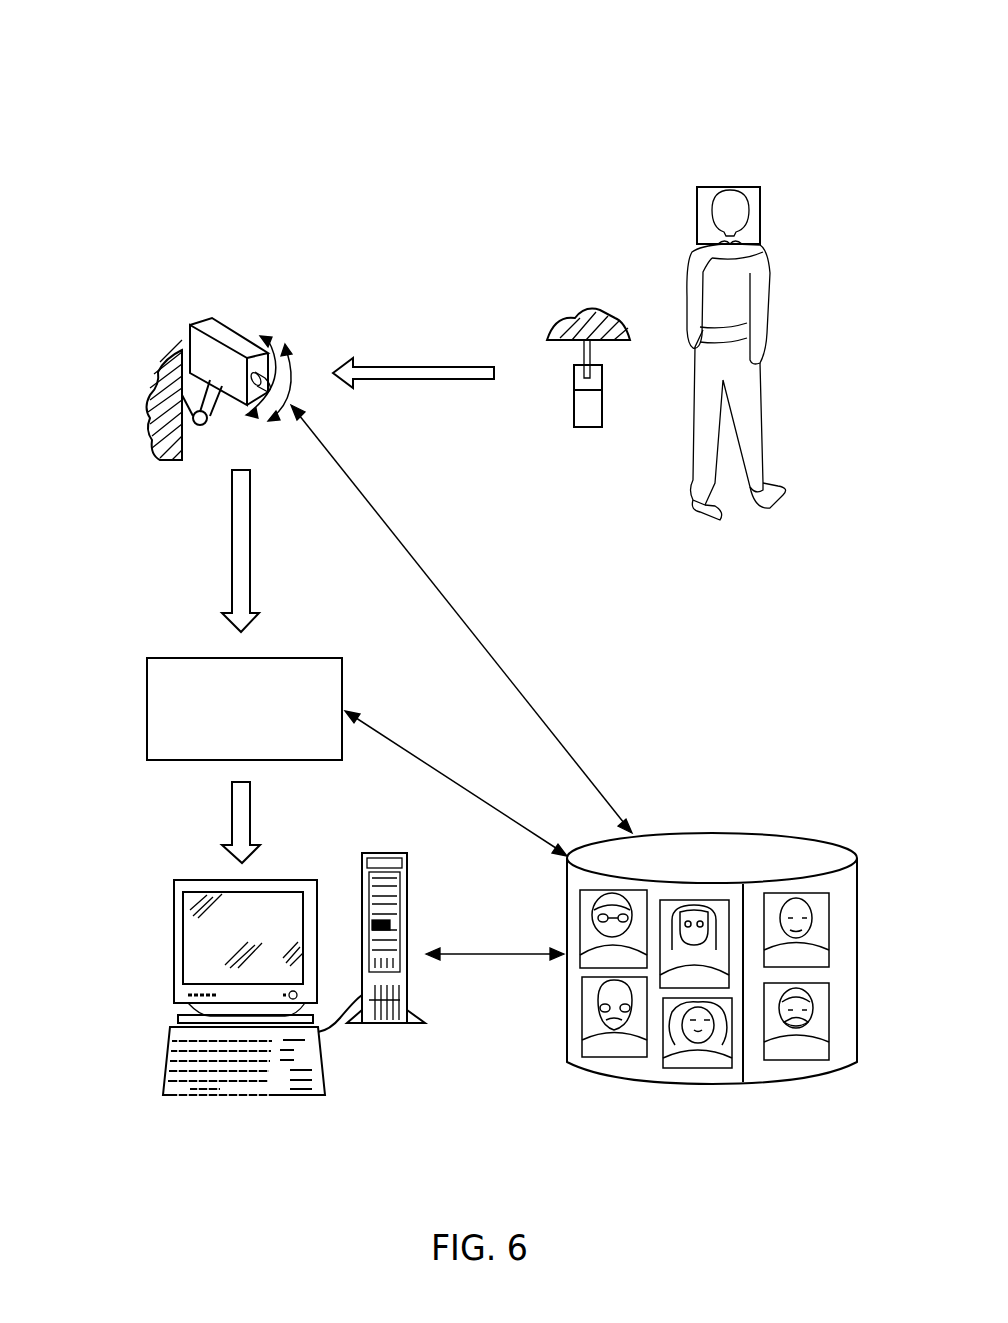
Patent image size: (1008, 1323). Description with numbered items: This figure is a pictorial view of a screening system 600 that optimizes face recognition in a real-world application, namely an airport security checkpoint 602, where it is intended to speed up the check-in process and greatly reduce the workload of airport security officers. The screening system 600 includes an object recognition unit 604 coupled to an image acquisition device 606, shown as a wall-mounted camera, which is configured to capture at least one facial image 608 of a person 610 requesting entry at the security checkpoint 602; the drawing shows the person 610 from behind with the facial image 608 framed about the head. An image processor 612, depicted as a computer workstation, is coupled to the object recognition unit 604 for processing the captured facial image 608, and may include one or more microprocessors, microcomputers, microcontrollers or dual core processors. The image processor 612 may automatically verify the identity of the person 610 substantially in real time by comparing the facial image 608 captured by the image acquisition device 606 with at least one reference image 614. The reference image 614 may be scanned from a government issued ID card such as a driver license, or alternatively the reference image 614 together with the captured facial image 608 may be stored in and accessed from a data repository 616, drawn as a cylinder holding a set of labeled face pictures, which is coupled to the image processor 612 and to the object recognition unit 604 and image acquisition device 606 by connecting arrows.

The screening system 600 is at (590, 74).
The airport security checkpoint 602 is at (565, 318).
The object recognition unit 604 is at (147, 716).
The image acquisition device 606 is at (200, 324).
The facial image 608 is at (742, 188).
The person 610 is at (793, 290).
The image processor 612 is at (174, 904).
The reference image 614 is at (838, 1063).
The data repository 616 is at (773, 858).